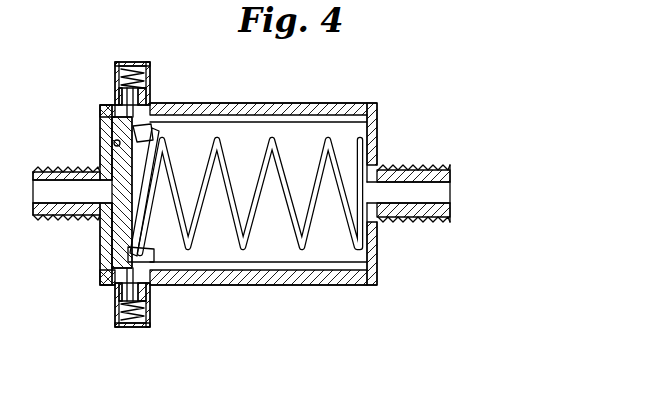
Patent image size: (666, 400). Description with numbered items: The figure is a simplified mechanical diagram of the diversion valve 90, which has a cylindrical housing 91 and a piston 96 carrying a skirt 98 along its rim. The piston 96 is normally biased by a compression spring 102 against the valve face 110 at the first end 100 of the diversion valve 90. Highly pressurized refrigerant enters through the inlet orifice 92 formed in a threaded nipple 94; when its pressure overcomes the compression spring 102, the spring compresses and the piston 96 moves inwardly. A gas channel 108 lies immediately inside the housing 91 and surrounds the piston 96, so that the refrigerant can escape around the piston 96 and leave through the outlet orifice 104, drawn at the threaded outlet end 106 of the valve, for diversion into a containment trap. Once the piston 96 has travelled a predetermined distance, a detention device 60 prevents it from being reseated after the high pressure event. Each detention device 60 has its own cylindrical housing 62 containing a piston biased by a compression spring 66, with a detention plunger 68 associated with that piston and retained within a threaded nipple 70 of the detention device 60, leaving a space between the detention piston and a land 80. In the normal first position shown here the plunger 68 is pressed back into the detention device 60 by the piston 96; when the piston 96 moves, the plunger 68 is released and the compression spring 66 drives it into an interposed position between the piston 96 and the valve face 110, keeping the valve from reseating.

The detention device 60 is at (135, 204).
The cylindrical housing 62 is at (137, 62).
The compression spring 66 is at (137, 67).
The detention plunger 68 is at (168, 130).
The threaded nipple 70 is at (105, 86).
The land 80 is at (140, 82).
The diversion valve 90 is at (355, 98).
The cylindrical housing 91 is at (292, 106).
The inlet orifice 92 is at (35, 192).
The threaded nipple 94 is at (33, 217).
The piston 96 is at (107, 254).
The skirt 98 is at (146, 130).
The first end 100 is at (107, 284).
The compression spring 102 is at (300, 245).
The outlet orifice 104 is at (448, 195).
The outlet port threads 106 is at (407, 165).
The gas channel 108 is at (378, 113).
The valve face 110 is at (108, 142).